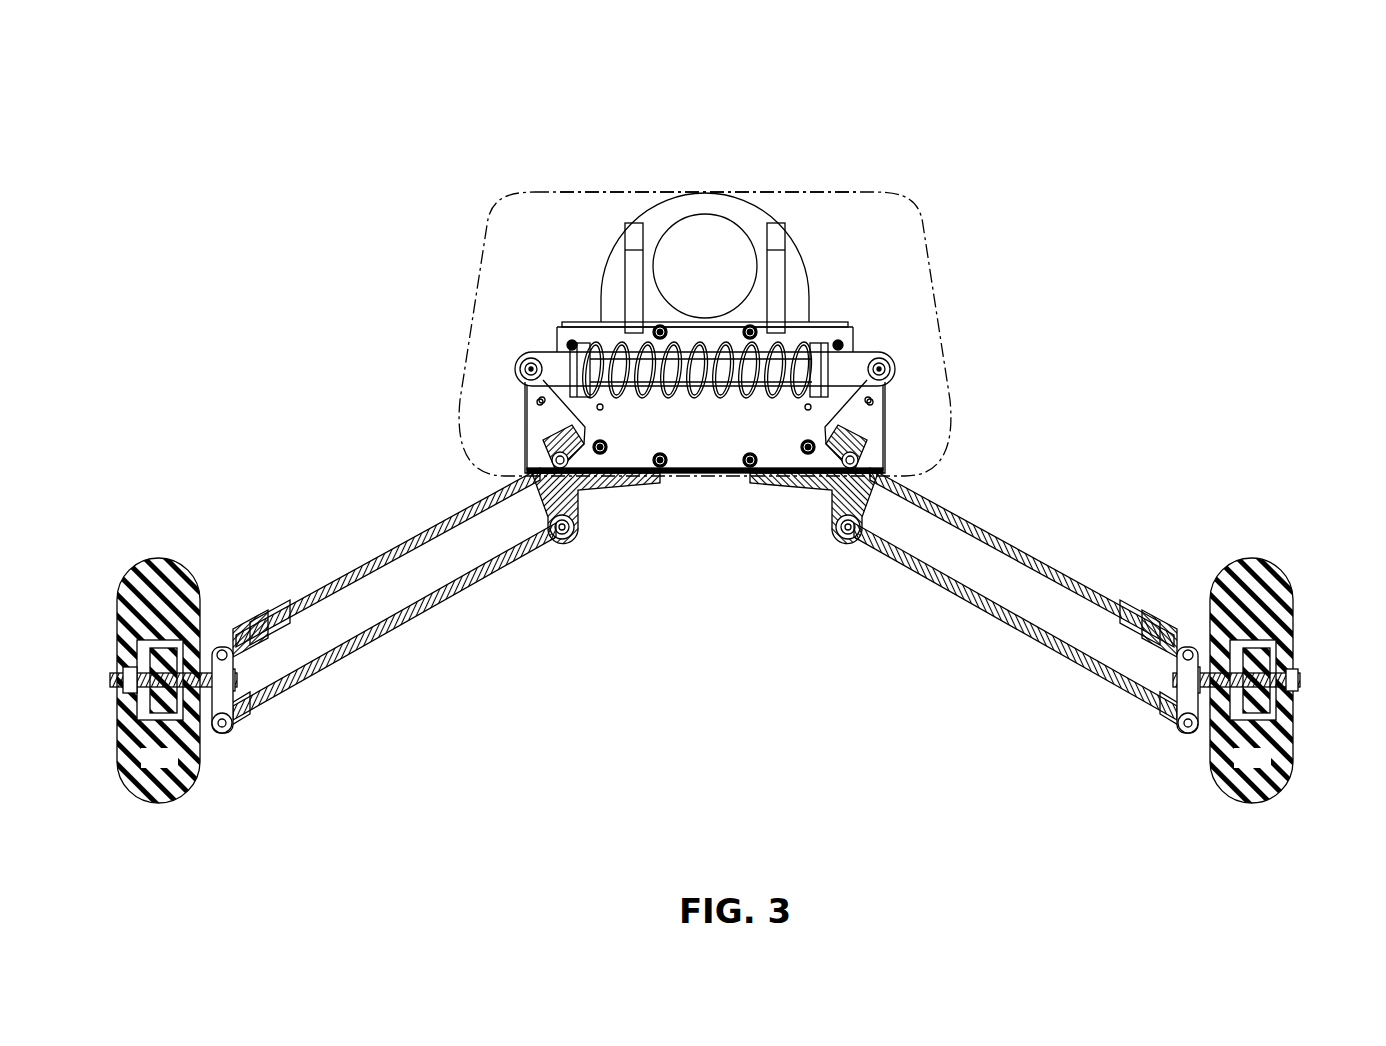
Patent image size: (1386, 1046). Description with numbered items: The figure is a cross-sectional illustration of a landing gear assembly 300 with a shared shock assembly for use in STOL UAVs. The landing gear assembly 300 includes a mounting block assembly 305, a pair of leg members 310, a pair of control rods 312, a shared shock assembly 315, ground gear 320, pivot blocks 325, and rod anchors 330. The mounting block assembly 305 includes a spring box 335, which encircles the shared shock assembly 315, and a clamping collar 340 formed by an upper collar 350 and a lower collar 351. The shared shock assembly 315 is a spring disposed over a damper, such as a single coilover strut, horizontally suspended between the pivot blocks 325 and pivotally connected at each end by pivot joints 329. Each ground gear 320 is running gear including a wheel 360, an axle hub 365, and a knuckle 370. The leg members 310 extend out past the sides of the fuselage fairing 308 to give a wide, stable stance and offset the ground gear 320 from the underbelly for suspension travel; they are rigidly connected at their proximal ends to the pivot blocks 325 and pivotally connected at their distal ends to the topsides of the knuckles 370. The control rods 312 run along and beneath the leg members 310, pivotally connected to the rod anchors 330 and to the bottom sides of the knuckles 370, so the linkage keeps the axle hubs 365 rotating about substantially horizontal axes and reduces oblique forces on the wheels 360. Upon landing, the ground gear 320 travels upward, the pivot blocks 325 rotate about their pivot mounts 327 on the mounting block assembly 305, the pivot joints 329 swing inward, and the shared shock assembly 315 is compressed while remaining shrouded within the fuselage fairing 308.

The landing gear assembly 300 is at (1070, 131).
The mounting block assembly 305 is at (515, 139).
The fuselage fairing 308 is at (510, 200).
The leg members 310 is at (388, 550).
The control rods 312 is at (407, 620).
The shared shock assembly 315 is at (877, 344).
The ground gear 320 is at (117, 542).
The pivot blocks 325 is at (514, 408).
The pivot mounts 327 is at (523, 468).
The pivot joints 329 is at (515, 357).
The rod anchors 330 is at (610, 504).
The spring box 335 is at (697, 438).
The clamping collar 340 is at (645, 192).
The upper collar 350 is at (750, 217).
The lower collar 351 is at (810, 292).
The wheel 360 is at (146, 768).
The axle hub 365 is at (112, 678).
The knuckle 370 is at (237, 727).